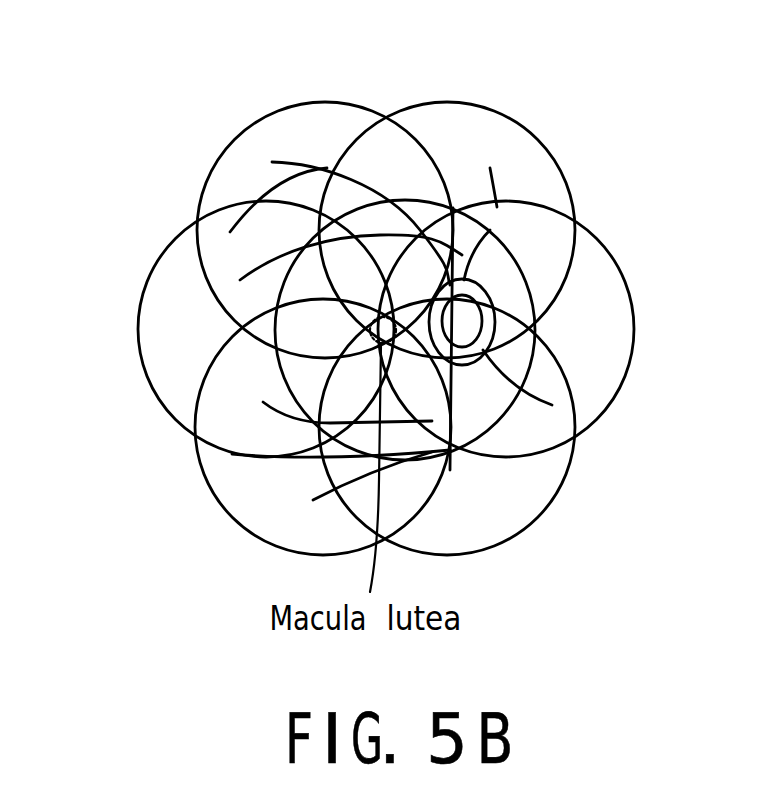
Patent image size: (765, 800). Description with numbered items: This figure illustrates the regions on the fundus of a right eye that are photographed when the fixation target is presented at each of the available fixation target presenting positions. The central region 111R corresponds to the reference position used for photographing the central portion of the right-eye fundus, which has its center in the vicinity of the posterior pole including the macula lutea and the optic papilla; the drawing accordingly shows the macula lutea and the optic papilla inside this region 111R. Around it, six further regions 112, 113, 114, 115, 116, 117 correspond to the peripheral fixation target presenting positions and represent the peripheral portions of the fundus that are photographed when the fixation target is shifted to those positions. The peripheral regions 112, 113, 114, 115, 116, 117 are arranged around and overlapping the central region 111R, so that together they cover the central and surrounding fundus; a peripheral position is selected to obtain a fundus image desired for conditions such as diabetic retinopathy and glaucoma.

The region on the fundus to be photographed 111R is at (532, 375).
The region on the fundus to be photographed 112 is at (140, 329).
The region on the fundus to be photographed 113 is at (291, 103).
The region on the fundus to be photographed 114 is at (528, 131).
The region on the fundus to be photographed 115 is at (633, 335).
The region on the fundus to be photographed 116 is at (513, 537).
The region on the fundus to be photographed 117 is at (258, 544).